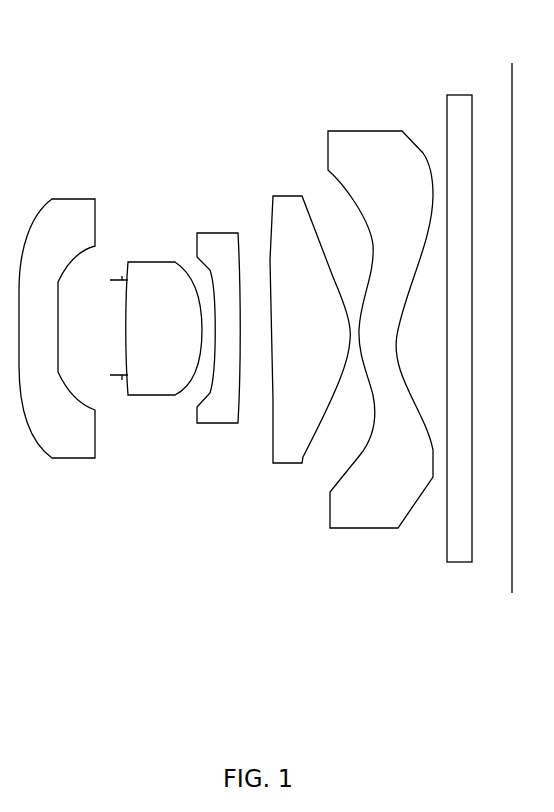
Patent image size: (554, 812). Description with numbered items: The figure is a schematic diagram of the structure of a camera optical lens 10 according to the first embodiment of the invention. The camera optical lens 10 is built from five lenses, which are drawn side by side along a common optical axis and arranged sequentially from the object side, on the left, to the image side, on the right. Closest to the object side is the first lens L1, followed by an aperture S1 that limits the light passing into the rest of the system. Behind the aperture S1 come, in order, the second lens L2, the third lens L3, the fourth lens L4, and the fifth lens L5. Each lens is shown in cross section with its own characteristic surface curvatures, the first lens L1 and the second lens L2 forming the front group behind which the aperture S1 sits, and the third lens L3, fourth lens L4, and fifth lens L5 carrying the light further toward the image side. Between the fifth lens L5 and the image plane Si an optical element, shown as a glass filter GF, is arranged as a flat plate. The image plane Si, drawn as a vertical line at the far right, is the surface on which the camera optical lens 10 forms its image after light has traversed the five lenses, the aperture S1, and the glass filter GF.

The camera optical lens 10 is at (283, 34).
The first lens L1 is at (57, 317).
The aperture S1 is at (114, 319).
The second lens L2 is at (164, 317).
The third lens L3 is at (218, 317).
The fourth lens L4 is at (310, 318).
The fifth lens L5 is at (380, 319).
The glass filter GF is at (460, 318).
The image plane Si is at (512, 318).